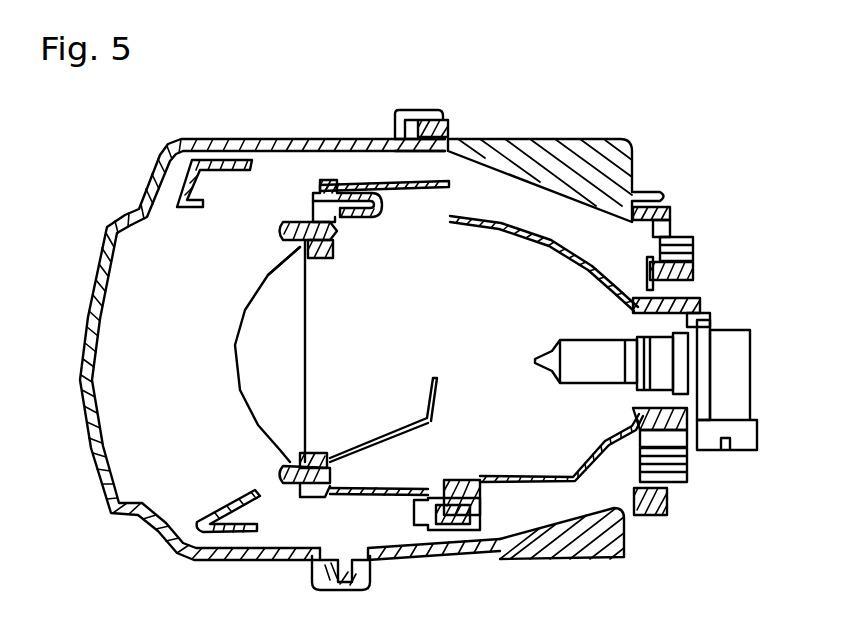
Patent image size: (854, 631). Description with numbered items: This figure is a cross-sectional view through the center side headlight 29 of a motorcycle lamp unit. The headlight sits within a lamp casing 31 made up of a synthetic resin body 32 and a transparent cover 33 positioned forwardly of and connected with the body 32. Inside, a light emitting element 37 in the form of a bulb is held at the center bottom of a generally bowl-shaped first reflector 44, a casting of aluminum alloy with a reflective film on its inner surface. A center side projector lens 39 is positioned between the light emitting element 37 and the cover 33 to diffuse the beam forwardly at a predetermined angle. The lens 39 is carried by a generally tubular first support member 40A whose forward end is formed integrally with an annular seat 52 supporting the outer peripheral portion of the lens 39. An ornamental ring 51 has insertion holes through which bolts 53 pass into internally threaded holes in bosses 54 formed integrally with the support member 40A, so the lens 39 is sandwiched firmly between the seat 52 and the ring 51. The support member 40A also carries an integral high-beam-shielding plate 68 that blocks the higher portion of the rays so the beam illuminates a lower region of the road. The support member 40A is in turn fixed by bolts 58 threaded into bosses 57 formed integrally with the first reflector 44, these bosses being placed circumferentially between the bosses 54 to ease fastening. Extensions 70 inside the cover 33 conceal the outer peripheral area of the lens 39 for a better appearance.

The center side headlight 29 is at (235, 299).
The lamp casing 31 is at (455, 48).
The body 32 is at (493, 139).
The transparent cover 33 is at (348, 139).
The light emitting element 37 is at (589, 368).
The center side projector lens 39 is at (258, 345).
The first support member 40A is at (412, 193).
The first reflector 44 is at (542, 223).
The ornamental ring 51 is at (297, 222).
The annular seat 52 is at (322, 258).
The bolt 53 is at (322, 221).
The boss 54 is at (349, 217).
The boss 57 is at (466, 480).
The bolt 58 is at (446, 530).
The high-beam-shielding plate 68 is at (425, 420).
The extension 70 is at (181, 207).